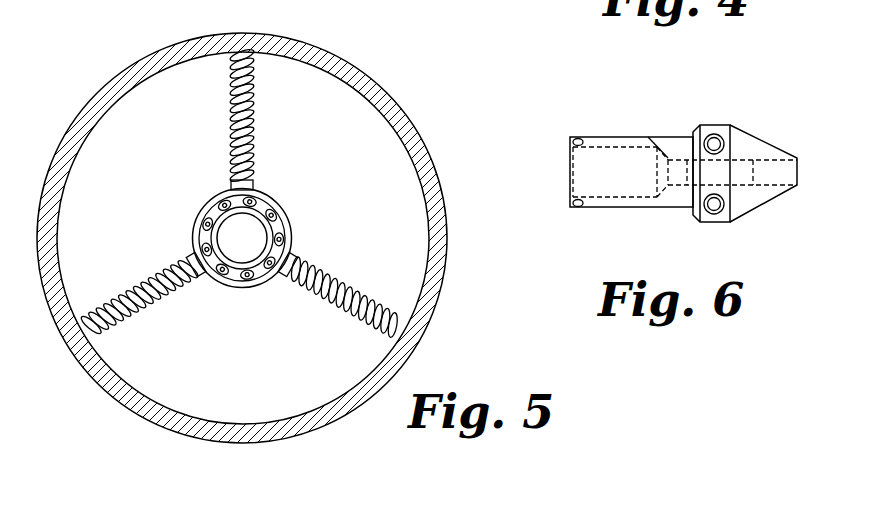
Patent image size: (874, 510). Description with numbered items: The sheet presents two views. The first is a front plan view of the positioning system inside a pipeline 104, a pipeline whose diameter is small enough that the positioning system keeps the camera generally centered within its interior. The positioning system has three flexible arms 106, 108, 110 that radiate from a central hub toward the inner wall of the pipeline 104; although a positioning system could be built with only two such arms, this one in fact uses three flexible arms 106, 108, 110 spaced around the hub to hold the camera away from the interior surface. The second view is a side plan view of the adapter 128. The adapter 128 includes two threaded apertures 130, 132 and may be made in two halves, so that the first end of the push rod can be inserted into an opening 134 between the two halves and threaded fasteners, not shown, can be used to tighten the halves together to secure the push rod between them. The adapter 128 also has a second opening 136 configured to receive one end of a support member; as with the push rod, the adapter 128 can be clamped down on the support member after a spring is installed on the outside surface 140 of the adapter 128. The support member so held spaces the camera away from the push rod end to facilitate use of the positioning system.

In FIG. 5, the pipeline 104 is at (388, 92).
In FIG. 5, the flexible arm 106 is at (255, 118).
In FIG. 5, the flexible arm 108 is at (350, 310).
In FIG. 5, the flexible arm 110 is at (150, 273).
In FIG. 6, the adapter 128 is at (667, 128).
In FIG. 6, the threaded aperture 130 is at (713, 132).
In FIG. 6, the threaded aperture 132 is at (717, 215).
In FIG. 6, the opening 134 is at (797, 168).
In FIG. 6, the second opening 136 is at (570, 160).
In FIG. 6, the outside surface 140 is at (642, 207).